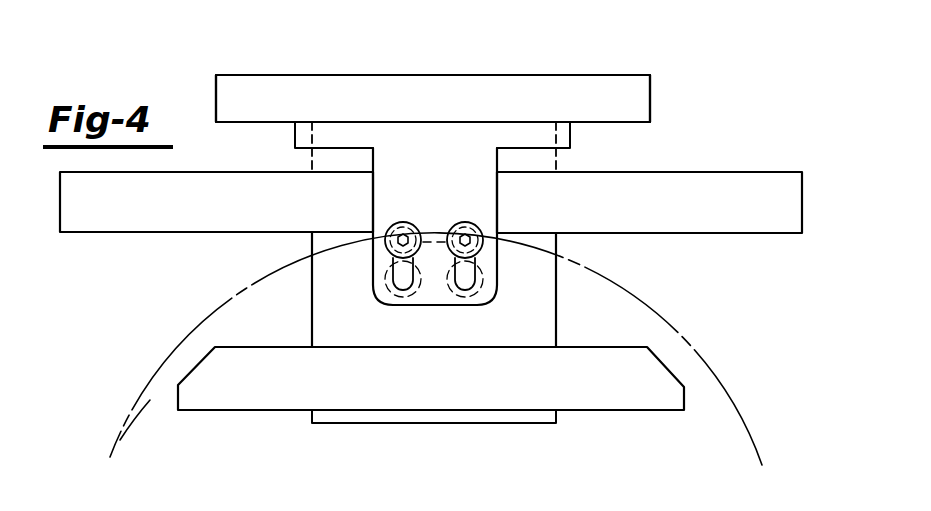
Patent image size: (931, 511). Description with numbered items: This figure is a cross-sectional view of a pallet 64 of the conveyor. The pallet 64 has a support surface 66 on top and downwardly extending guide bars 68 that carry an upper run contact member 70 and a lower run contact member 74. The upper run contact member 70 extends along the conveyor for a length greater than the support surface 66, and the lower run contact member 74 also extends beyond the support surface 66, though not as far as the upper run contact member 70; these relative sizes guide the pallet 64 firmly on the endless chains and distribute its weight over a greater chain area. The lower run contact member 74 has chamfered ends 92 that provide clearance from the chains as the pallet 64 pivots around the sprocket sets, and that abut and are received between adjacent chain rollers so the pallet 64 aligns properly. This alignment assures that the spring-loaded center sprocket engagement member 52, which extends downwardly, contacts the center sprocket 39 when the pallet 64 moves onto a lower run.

The center sprocket 39 is at (157, 426).
The center sprocket engagement member 52 is at (488, 217).
The pallet 64 is at (446, 66).
The support surface 66 is at (290, 86).
The guide bars 68 is at (322, 251).
The upper run contact member 70 is at (180, 171).
The lower run contact member 74 is at (650, 364).
The chamfered ends 92 is at (200, 362).